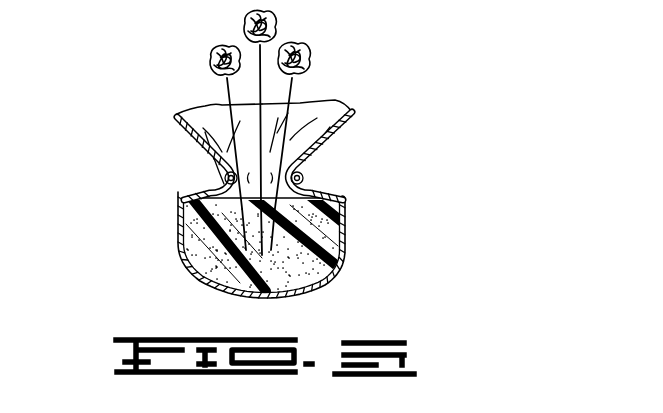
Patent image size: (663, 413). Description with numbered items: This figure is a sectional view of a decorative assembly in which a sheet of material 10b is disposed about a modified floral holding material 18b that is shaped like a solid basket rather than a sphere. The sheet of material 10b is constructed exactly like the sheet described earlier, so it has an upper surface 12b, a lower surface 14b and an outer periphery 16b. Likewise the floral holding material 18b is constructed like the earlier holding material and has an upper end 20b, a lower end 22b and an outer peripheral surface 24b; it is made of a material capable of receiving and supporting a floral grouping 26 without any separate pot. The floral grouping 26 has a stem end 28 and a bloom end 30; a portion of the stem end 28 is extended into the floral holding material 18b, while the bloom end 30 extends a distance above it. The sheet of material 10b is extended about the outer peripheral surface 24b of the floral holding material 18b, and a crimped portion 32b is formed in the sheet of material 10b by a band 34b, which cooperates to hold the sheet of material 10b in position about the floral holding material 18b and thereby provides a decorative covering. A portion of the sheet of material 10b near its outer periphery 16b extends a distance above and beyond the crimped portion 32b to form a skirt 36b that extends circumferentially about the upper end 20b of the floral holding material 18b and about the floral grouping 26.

The sheet of material 10b is at (261, 257).
The outer wall 12b is at (188, 268).
The inner wall 14b is at (335, 266).
The wrapping sheet 16b is at (348, 110).
The floral holding material 18b is at (350, 211).
The eyelet fastener 20b is at (312, 187).
The bottom 22b is at (262, 297).
The floral foam stripes 24b is at (265, 243).
The floral grouping 26 is at (298, 32).
The stem end 28 is at (182, 209).
The bloom end 30 is at (200, 47).
The crimped portion 32b is at (224, 108).
The band 34b is at (228, 173).
The right stiffening strip 36b is at (352, 124).